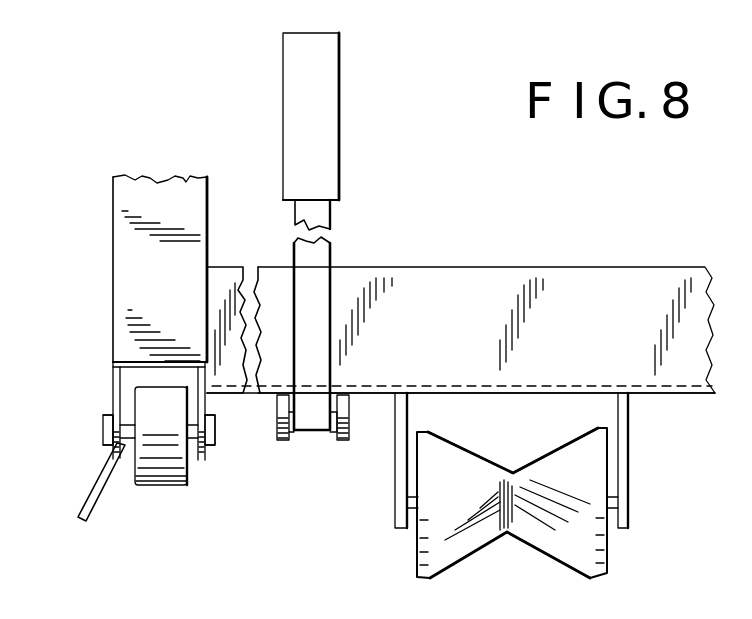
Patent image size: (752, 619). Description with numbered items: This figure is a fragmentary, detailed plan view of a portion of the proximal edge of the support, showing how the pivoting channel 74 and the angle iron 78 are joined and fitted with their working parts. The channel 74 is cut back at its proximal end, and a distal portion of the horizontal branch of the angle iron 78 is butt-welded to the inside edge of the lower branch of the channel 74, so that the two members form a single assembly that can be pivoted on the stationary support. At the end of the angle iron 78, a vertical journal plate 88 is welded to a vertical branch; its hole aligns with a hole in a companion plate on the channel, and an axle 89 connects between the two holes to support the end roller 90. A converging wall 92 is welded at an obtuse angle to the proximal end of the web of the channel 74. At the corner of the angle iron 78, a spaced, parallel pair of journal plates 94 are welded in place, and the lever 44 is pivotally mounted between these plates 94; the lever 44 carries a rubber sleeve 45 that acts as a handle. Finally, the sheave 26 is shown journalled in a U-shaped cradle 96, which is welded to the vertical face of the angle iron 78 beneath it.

The sheave 26 is at (557, 560).
The lever 44 is at (328, 297).
The rubber sleeve 45 is at (330, 100).
The channel 74 is at (113, 258).
The angle iron 78 is at (628, 278).
The vertical journal plate 88 is at (207, 460).
The axle 89 is at (128, 448).
The end roller 90 is at (170, 487).
The converging wall 92 is at (98, 491).
The journal plates 94 is at (344, 441).
The U-shaped cradle 96 is at (628, 433).